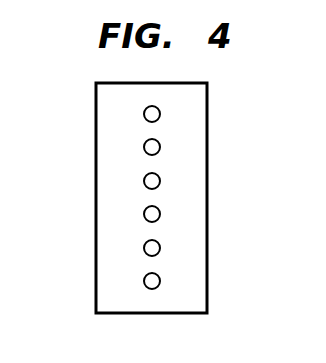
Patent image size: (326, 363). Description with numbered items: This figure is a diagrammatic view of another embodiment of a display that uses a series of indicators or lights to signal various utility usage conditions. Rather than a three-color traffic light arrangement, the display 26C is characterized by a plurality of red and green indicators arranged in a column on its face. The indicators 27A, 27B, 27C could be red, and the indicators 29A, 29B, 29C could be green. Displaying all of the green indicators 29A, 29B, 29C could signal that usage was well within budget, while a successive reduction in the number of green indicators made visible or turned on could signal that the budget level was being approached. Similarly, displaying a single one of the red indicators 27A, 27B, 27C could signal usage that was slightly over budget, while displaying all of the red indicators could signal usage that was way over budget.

The display 26C is at (208, 129).
The indicator 27A is at (150, 114).
The indicator 27B is at (150, 147).
The indicator 27C is at (150, 181).
The indicator 29A is at (150, 214).
The indicator 29B is at (150, 248).
The indicator 29C is at (150, 281).